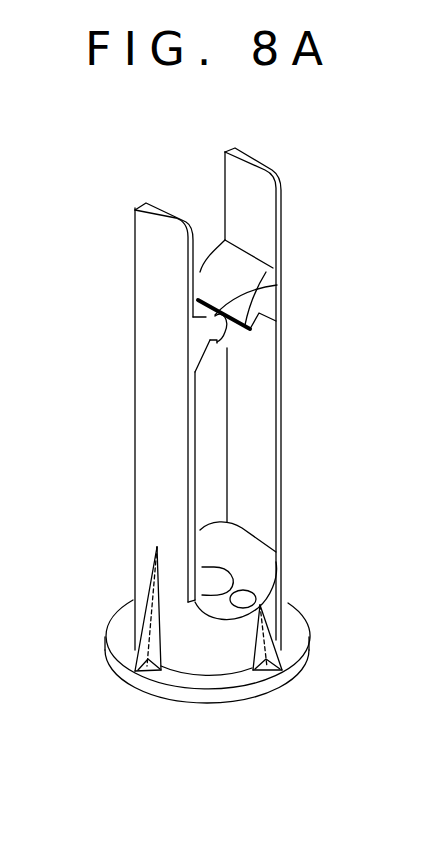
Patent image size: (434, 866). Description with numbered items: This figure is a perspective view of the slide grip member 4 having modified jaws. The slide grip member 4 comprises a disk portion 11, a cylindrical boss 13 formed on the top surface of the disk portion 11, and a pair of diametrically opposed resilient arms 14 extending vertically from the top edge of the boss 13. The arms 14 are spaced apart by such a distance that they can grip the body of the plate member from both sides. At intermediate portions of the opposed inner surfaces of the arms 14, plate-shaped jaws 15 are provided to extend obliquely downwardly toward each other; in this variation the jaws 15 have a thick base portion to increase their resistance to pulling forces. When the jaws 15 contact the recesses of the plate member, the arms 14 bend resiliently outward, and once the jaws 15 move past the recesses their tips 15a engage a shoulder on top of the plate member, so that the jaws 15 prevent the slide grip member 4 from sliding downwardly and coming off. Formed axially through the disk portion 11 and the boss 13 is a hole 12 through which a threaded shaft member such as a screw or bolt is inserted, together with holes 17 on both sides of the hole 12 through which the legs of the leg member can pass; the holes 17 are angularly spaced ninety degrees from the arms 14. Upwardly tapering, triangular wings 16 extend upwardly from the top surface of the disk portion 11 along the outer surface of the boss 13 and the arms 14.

The slide grip member 4 is at (306, 642).
The disk portion 11 is at (189, 693).
The hole 12 is at (198, 570).
The cylindrical boss 13 is at (215, 655).
The resilient arms 14 is at (281, 195).
The jaws 15 is at (268, 287).
The tips 15a is at (218, 341).
The triangular wings 16 is at (145, 687).
The holes 17 is at (244, 590).